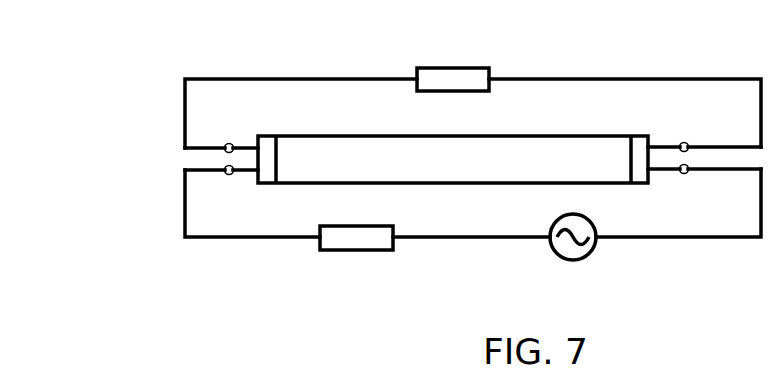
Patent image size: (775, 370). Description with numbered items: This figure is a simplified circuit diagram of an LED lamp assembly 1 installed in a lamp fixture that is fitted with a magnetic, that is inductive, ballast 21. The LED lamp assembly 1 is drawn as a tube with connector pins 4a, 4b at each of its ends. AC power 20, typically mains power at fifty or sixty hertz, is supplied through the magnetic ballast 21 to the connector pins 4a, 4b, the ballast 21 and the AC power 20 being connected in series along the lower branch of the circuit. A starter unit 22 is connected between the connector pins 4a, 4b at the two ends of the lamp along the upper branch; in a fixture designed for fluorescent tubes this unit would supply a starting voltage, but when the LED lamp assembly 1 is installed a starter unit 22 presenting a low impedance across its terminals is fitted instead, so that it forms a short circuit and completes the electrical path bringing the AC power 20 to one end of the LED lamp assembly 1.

The LED lamp assembly 1 is at (498, 135).
The connector pin 4a is at (240, 147).
The connector pin 4b is at (670, 145).
The AC power 20 is at (582, 255).
The magnetic ballast 21 is at (373, 253).
The starter unit 22 is at (467, 65).